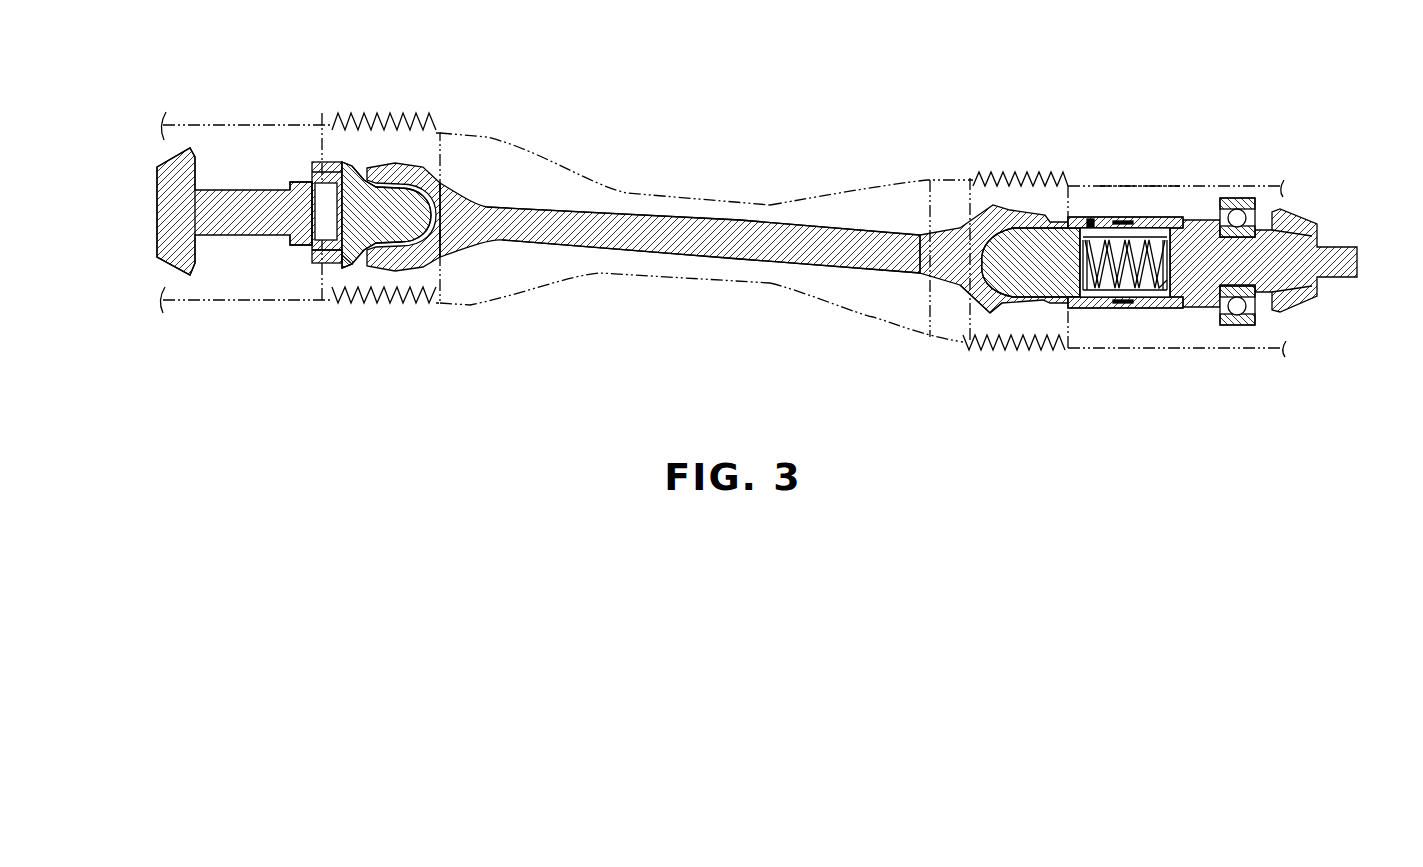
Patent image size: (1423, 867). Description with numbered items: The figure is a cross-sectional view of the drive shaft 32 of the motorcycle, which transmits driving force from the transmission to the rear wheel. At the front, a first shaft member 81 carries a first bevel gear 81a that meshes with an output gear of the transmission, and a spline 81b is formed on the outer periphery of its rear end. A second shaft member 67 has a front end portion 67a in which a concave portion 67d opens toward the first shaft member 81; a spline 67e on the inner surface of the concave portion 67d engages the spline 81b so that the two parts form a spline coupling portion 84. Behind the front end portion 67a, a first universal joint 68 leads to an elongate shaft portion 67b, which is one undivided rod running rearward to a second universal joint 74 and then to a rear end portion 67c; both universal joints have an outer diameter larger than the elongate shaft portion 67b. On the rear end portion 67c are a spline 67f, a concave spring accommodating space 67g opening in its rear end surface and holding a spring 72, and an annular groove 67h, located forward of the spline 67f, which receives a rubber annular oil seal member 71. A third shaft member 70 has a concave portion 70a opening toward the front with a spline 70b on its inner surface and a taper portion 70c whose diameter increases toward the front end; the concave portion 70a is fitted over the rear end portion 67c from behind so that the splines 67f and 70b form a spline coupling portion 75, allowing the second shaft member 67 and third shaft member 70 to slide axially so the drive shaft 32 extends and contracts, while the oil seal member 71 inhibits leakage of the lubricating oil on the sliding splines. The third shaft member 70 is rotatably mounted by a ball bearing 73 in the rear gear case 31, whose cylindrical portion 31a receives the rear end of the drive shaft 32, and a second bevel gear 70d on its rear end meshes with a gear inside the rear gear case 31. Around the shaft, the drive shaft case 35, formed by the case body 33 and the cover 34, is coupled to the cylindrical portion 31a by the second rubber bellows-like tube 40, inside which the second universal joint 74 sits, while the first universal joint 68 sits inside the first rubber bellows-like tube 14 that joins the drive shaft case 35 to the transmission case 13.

The transmission case 13 is at (213, 302).
The first rubber bellows-like tube 14 is at (368, 303).
The rear gear case 31 is at (1263, 350).
The cylindrical portion 31a is at (1135, 186).
The drive shaft 32 is at (553, 208).
The case body 33 is at (937, 185).
The cover 34 is at (838, 205).
The drive shaft case 35 is at (706, 197).
The second rubber bellows-like tube 40 is at (1003, 172).
The second shaft member 67 is at (680, 205).
The front end portion 67a is at (342, 160).
The elongate shaft portion 67b is at (713, 256).
The rear end portion 67c is at (994, 326).
The concave portion 67d is at (315, 267).
The spline 67e is at (330, 270).
The spline 67f is at (1150, 307).
The spring accommodating space 67g is at (1132, 307).
The annular groove 67h is at (1078, 305).
The first universal joint 68 is at (385, 165).
The third shaft member 70 is at (1285, 260).
The concave portion 70a is at (1183, 307).
The spline 70b is at (1167, 307).
The taper portion 70c is at (1090, 218).
The second bevel gear 70d is at (1338, 212).
The annular oil seal member 71 is at (1092, 215).
The spring 72 is at (1150, 236).
The ball bearing 73 is at (1258, 198).
The second universal joint 74 is at (1010, 318).
The spline coupling portion 75 is at (1110, 200).
The first shaft member 81 is at (192, 162).
The first bevel gear 81a is at (157, 160).
The spline 81b is at (310, 185).
The spline coupling portion 84 is at (320, 185).